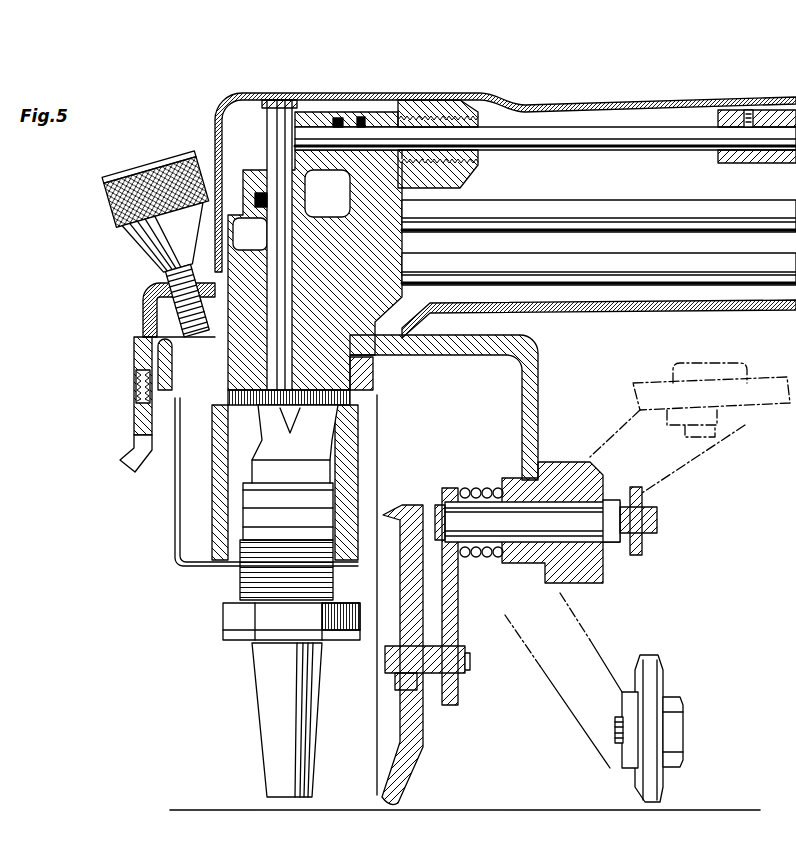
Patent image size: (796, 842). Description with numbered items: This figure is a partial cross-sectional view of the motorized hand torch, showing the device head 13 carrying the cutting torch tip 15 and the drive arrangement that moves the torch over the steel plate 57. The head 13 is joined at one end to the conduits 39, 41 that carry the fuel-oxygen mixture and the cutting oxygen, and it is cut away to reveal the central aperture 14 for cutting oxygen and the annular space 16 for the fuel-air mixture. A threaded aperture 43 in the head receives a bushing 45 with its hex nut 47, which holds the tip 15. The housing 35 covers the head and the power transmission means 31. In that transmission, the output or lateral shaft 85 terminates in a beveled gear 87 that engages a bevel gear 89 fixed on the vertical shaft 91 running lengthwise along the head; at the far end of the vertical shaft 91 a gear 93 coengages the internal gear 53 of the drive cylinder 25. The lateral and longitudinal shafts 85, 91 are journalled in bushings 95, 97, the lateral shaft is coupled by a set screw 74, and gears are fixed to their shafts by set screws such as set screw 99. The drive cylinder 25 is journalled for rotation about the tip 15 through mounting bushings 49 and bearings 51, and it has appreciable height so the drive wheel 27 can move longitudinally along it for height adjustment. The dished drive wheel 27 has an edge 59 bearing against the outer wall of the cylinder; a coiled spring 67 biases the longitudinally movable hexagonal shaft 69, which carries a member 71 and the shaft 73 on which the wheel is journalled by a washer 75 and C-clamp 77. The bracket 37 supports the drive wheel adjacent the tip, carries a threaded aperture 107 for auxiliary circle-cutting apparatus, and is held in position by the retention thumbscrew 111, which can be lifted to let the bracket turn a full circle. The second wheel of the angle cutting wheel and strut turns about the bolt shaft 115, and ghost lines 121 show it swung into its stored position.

The device head 13 is at (152, 343).
The central aperture 14 is at (340, 455).
The cutting torch tip 15 is at (263, 763).
The annular space 16 is at (186, 558).
The drive cylinder 25 is at (373, 420).
The drive wheel 27 is at (427, 728).
The power transmission means 31 is at (512, 115).
The housing 35 is at (584, 100).
The bracket 37 is at (535, 347).
The conduit 39 is at (683, 220).
The conduit 41 is at (745, 272).
The threaded aperture 43 is at (243, 575).
The bushing 45 is at (240, 635).
The hex nut 47 is at (300, 620).
The mounting bushings 49 is at (352, 487).
The bearings 51 is at (377, 377).
The internal gear 53 is at (280, 445).
The steel plate 57 is at (523, 808).
The edge 59 is at (375, 802).
The coiled spring 67 is at (482, 490).
The hexagonal shaft 69 is at (593, 527).
The member 71 is at (457, 610).
The shaft 73 is at (453, 662).
The set screw 74 is at (750, 111).
The washer 75 is at (397, 628).
The C-clamp 77 is at (402, 677).
The output shaft 85 is at (658, 128).
The beveled gear 87 is at (336, 118).
The bevel gear 89 is at (283, 112).
The vertical shaft 91 is at (282, 158).
The gear 93 is at (290, 405).
The bushing 95 is at (392, 115).
The bushing 97 is at (200, 262).
The set screw 99 is at (255, 195).
The threaded aperture 107 is at (138, 396).
The retention thumbscrew 111 is at (102, 190).
The bolt shaft 115 is at (687, 727).
The ghost lines 121 is at (748, 400).